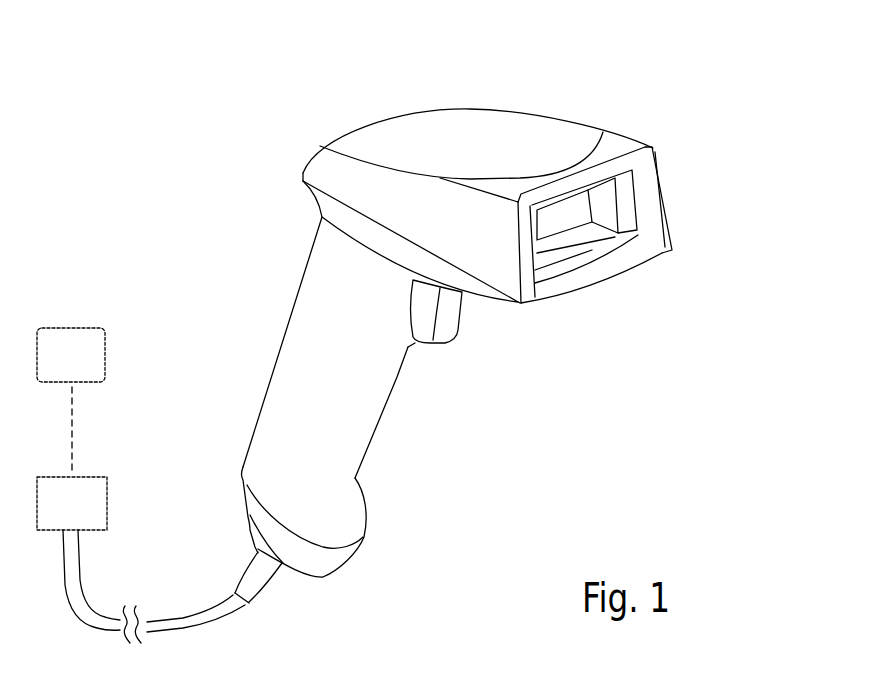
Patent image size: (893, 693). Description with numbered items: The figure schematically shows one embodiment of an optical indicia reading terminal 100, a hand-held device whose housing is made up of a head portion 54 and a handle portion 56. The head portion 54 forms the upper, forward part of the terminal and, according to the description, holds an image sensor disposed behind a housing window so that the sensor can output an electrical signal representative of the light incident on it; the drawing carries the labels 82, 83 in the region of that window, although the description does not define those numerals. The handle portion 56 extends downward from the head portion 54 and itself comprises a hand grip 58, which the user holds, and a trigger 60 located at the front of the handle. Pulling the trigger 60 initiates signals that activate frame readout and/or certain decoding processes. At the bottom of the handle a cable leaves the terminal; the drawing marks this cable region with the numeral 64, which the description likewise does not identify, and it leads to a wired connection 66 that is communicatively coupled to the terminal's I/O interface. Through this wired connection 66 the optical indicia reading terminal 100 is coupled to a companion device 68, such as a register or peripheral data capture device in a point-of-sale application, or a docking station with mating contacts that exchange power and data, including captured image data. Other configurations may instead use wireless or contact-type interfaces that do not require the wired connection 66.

The optical indicia reading terminal 100 is at (667, 55).
The head portion 54 is at (693, 138).
The handle portion 56 is at (397, 443).
The hand grip 58 is at (285, 363).
The trigger 60 is at (455, 318).
The scan window 82 is at (569, 206).
The imaging engine 83 is at (576, 224).
The cable 64 is at (280, 598).
The wired connection 66 is at (84, 513).
The companion device 68 is at (84, 367).